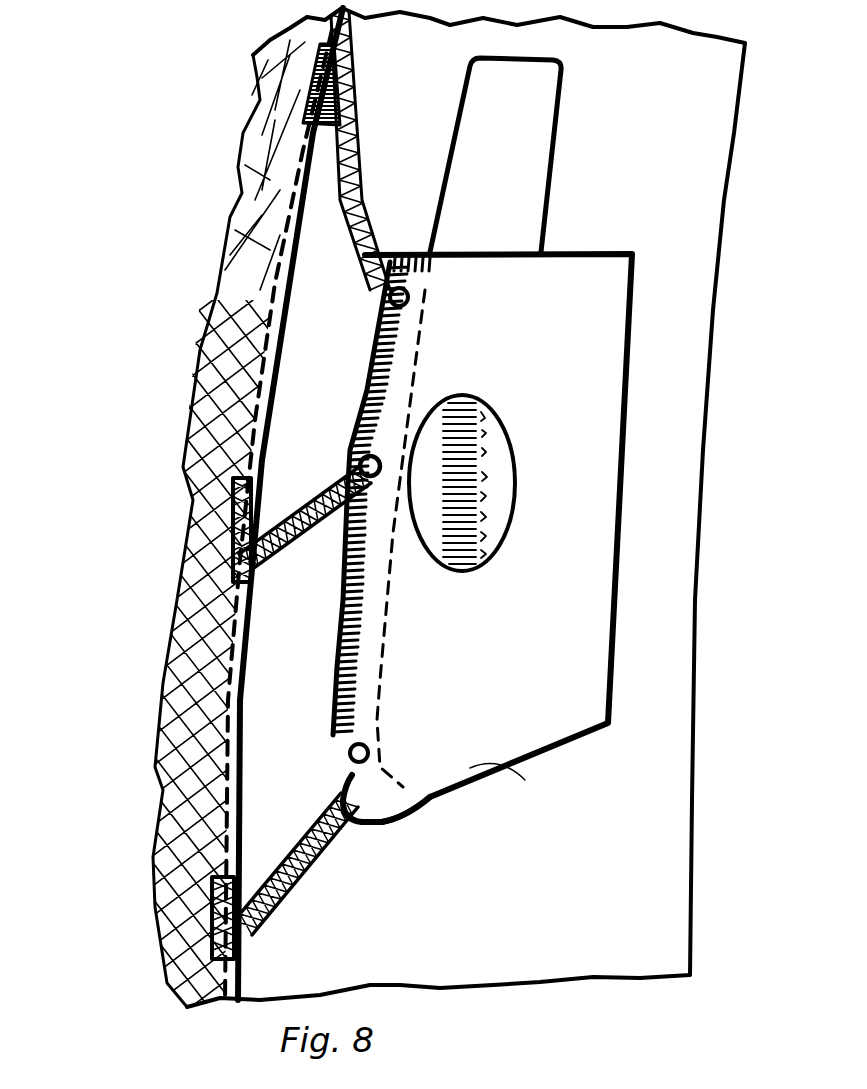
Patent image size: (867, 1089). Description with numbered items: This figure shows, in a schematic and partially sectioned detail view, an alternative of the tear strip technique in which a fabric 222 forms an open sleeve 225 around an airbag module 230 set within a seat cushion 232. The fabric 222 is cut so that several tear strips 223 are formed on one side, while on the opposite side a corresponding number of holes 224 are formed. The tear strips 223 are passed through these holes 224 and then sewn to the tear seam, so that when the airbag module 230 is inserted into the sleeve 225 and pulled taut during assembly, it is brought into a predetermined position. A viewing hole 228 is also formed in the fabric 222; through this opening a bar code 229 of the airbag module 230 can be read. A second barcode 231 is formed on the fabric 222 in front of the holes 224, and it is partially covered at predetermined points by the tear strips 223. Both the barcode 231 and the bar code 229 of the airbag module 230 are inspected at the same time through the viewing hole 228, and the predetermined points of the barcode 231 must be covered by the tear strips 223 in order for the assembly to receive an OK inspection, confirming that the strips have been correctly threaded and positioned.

The fabric 222 is at (543, 700).
The tear strips 223 is at (372, 215).
The holes 224 is at (410, 305).
The sleeve 225 is at (403, 807).
The viewing hole 228 is at (472, 527).
The bar code 229 is at (470, 467).
The airbag module 230 is at (525, 780).
The barcode 231 is at (387, 615).
The seat cushion 232 is at (657, 818).